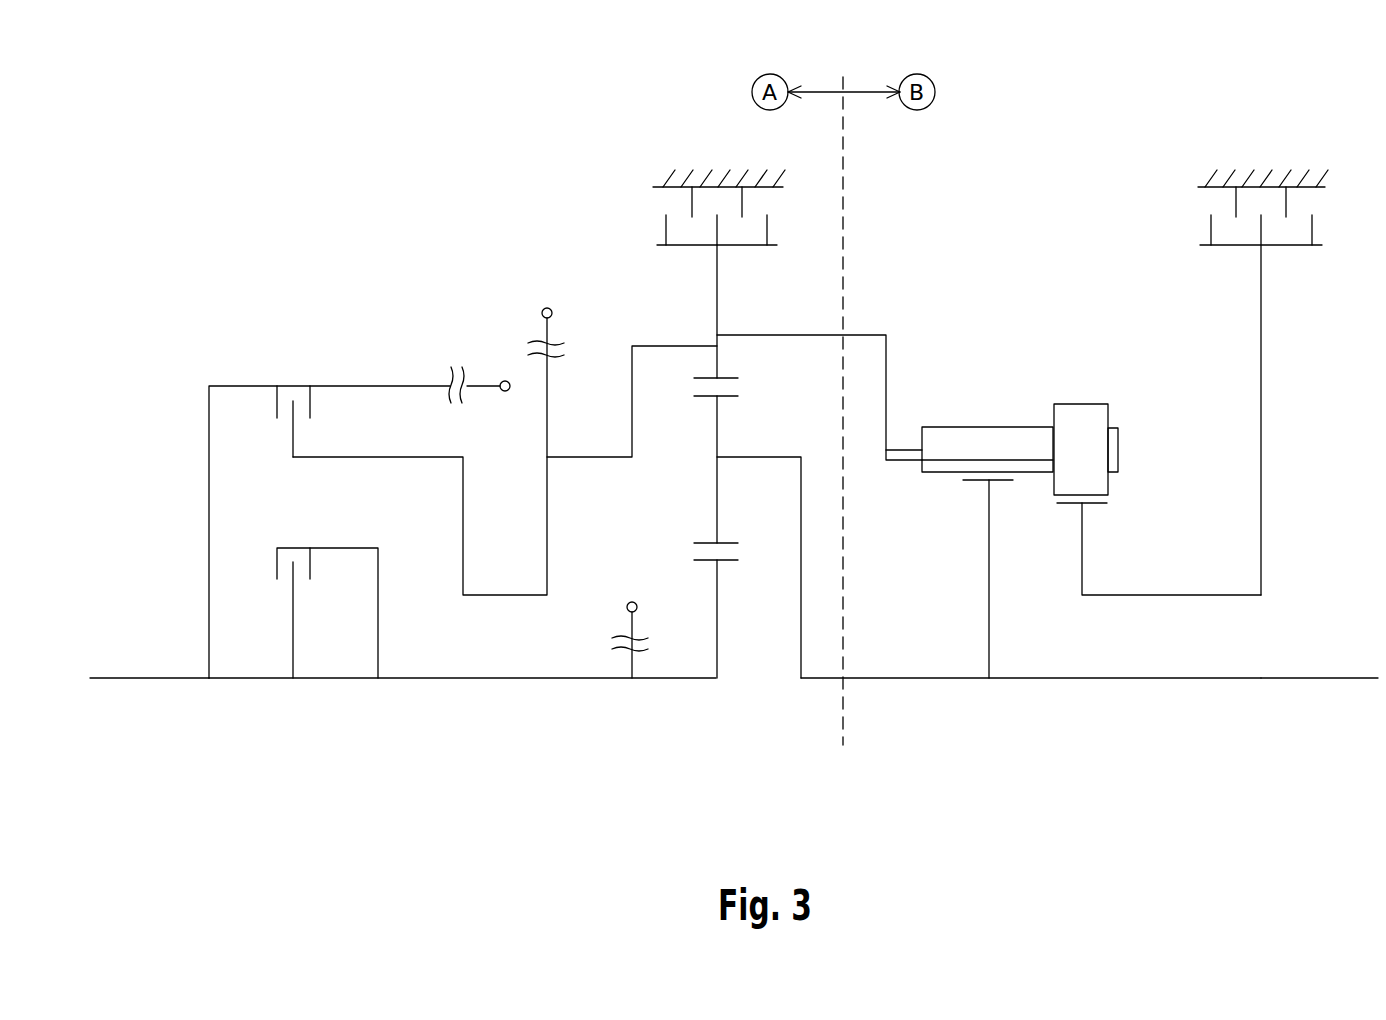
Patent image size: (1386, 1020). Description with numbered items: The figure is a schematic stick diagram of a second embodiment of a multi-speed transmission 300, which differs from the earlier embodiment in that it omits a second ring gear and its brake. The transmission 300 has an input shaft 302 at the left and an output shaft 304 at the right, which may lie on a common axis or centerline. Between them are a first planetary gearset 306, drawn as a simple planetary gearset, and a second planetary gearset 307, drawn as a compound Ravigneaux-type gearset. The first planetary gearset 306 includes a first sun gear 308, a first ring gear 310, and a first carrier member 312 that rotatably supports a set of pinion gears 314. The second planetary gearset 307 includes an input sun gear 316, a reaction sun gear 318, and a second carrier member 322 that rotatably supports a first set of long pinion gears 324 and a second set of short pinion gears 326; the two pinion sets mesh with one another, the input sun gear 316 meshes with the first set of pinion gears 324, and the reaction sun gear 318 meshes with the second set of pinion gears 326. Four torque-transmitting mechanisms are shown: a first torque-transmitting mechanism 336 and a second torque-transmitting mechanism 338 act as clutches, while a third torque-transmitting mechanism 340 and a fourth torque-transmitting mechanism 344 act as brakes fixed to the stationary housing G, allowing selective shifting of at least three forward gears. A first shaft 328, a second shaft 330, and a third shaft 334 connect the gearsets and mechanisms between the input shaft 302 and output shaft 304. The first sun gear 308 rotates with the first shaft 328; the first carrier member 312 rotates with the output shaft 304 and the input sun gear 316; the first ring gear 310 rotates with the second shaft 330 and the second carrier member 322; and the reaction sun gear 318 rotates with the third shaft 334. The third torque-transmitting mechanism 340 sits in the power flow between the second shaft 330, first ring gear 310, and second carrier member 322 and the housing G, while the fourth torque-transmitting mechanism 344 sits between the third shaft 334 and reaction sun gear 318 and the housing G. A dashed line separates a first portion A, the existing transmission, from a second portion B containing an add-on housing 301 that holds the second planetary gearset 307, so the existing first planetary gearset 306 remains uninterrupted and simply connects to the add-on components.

The multi-speed transmission 300 is at (252, 190).
The add-on housing 301 is at (1018, 122).
The input shaft 302 is at (146, 678).
The output shaft 304 is at (1317, 678).
The first planetary gearset 306 is at (717, 725).
The second planetary gearset 307 is at (992, 718).
The first sun gear 308 is at (730, 560).
The first ring gear 310 is at (728, 378).
The first carrier member 312 is at (705, 462).
The pinion gears 314 is at (730, 543).
The input sun gear 316 is at (998, 480).
The reaction sun gear 318 is at (1097, 505).
The second carrier member 322 is at (993, 415).
The first set of pinion gears 324 is at (938, 472).
The second set of pinion gears 326 is at (1108, 415).
The first shaft 328 is at (535, 678).
The second shaft 330 is at (388, 457).
The third shaft 334 is at (1261, 423).
The first torque-transmitting mechanism 336 is at (277, 562).
The second torque-transmitting mechanism 338 is at (277, 400).
The third torque-transmitting mechanism 340 is at (640, 205).
The fourth torque-transmitting mechanism 344 is at (1182, 211).